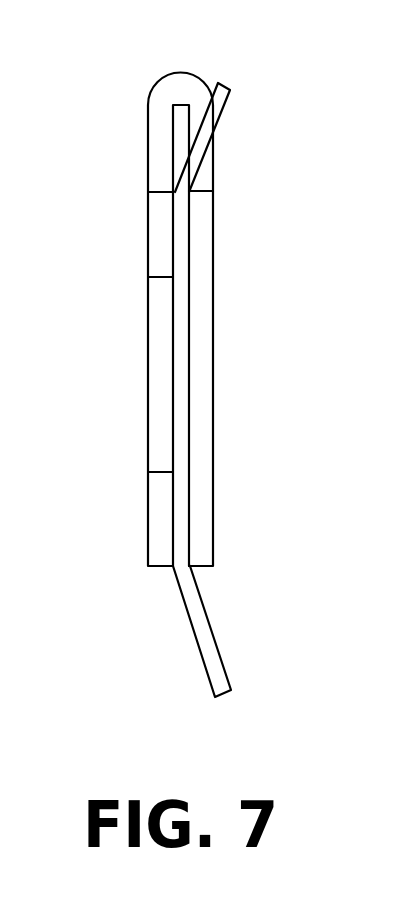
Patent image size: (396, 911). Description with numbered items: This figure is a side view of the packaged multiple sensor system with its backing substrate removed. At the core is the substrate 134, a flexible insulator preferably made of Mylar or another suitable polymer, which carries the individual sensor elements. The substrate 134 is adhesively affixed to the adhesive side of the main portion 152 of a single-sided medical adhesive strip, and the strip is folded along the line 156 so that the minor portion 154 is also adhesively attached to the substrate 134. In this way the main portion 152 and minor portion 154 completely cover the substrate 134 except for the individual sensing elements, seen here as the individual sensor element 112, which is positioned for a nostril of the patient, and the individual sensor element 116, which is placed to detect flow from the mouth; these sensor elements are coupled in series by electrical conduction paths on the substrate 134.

The individual sensor element 112 is at (222, 88).
The individual sensor element 116 is at (223, 688).
The substrate 134 is at (183, 412).
The main portion 152 is at (198, 345).
The minor portion 154 is at (162, 340).
The fold line 156 is at (177, 87).